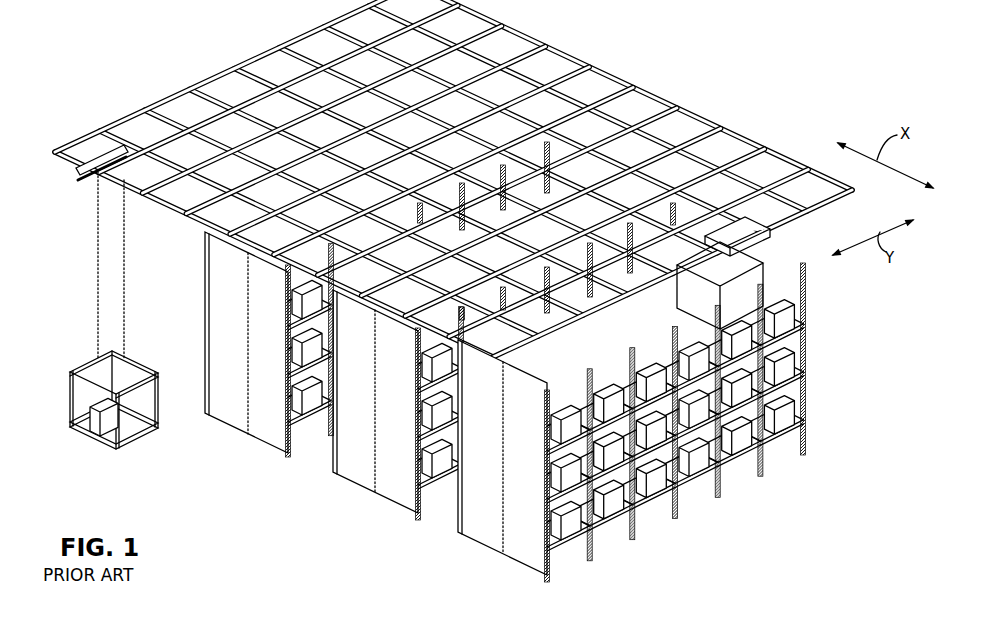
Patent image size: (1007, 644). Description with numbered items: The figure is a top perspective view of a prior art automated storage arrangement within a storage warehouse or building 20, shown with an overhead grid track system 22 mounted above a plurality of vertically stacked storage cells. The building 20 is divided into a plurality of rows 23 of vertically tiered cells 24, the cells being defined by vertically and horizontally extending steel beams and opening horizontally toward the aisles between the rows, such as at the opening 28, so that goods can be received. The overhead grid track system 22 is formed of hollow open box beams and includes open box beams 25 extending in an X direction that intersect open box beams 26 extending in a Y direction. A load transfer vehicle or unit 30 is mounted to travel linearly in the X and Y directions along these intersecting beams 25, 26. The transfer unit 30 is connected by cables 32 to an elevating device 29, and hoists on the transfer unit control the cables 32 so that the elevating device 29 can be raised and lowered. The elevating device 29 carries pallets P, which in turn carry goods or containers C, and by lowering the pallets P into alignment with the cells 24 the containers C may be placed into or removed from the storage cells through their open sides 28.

The storage warehouse or building 20 is at (497, 407).
The overhead grid track system 22 is at (465, 178).
The rows 23 is at (267, 446).
The vertically tiered cells 24 is at (650, 422).
The open box beams extending in an X direction 25 is at (758, 146).
The open box beams extending in a Y direction 26 is at (849, 196).
The horizontal cell opening 28 is at (806, 300).
The elevating device 29 is at (87, 413).
The load transfer vehicle or unit 30 is at (85, 172).
The cables 32 is at (97, 263).
The containers C is at (67, 406).
The pallets P is at (97, 442).